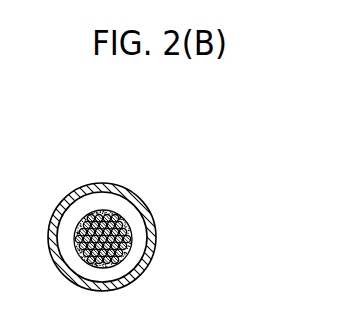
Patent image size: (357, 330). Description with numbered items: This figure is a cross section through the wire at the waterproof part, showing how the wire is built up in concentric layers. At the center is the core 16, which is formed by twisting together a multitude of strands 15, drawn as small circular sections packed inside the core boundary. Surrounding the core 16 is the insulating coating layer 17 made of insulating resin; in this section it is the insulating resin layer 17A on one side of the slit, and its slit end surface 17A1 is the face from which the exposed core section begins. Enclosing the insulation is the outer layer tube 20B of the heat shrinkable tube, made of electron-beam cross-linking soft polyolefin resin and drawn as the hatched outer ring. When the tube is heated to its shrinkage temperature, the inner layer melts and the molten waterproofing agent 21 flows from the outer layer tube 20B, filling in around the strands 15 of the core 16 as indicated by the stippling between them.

The strands 15 is at (108, 212).
The core 16 is at (142, 153).
The insulating coating layer 17 is at (138, 226).
The insulating resin layer 17A is at (134, 207).
The slit end surface 17A1 is at (132, 206).
The outer layer tube 20B is at (133, 193).
The molten waterproofing agent 21 is at (80, 253).